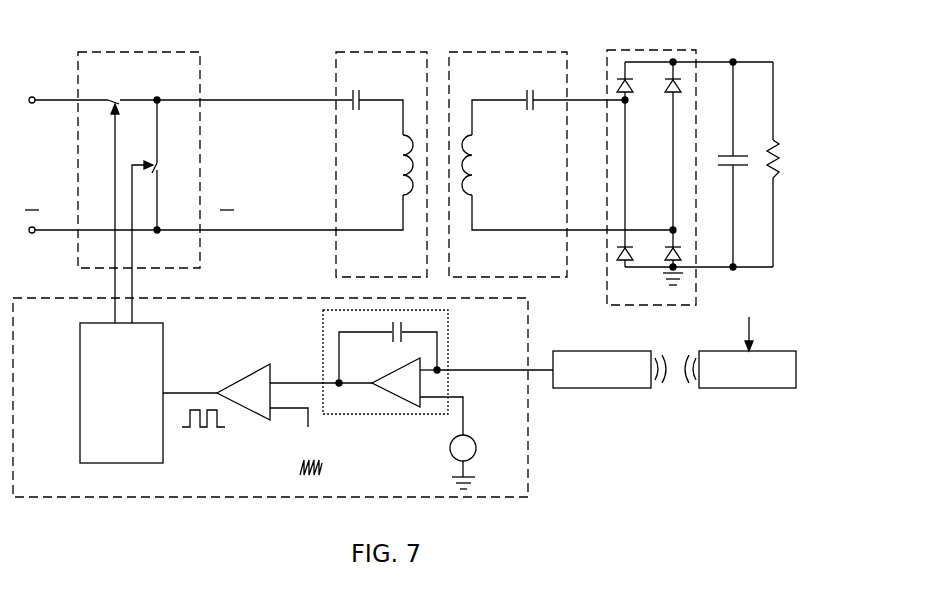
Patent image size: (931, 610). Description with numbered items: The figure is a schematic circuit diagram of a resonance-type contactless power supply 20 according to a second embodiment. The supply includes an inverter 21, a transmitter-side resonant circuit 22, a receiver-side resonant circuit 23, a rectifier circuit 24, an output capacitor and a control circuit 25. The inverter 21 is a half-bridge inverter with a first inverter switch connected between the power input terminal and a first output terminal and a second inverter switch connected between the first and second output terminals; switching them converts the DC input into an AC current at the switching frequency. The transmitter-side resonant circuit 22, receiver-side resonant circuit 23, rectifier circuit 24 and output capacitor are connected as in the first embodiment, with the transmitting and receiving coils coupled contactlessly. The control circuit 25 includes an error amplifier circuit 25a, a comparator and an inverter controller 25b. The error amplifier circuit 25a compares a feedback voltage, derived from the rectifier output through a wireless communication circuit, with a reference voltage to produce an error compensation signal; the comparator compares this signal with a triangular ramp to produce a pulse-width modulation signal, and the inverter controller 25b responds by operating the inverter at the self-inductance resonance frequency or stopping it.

The resonance-type contactless power supply 20 is at (766, 487).
The inverter 21 is at (128, 50).
The transmitter-side resonant circuit 22 is at (371, 50).
The receiver-side resonant circuit 23 is at (525, 50).
The rectifier circuit 24 is at (667, 50).
The control circuit 25 is at (529, 477).
The error amplifier circuit 25a is at (450, 346).
The inverter controller 25b is at (80, 374).